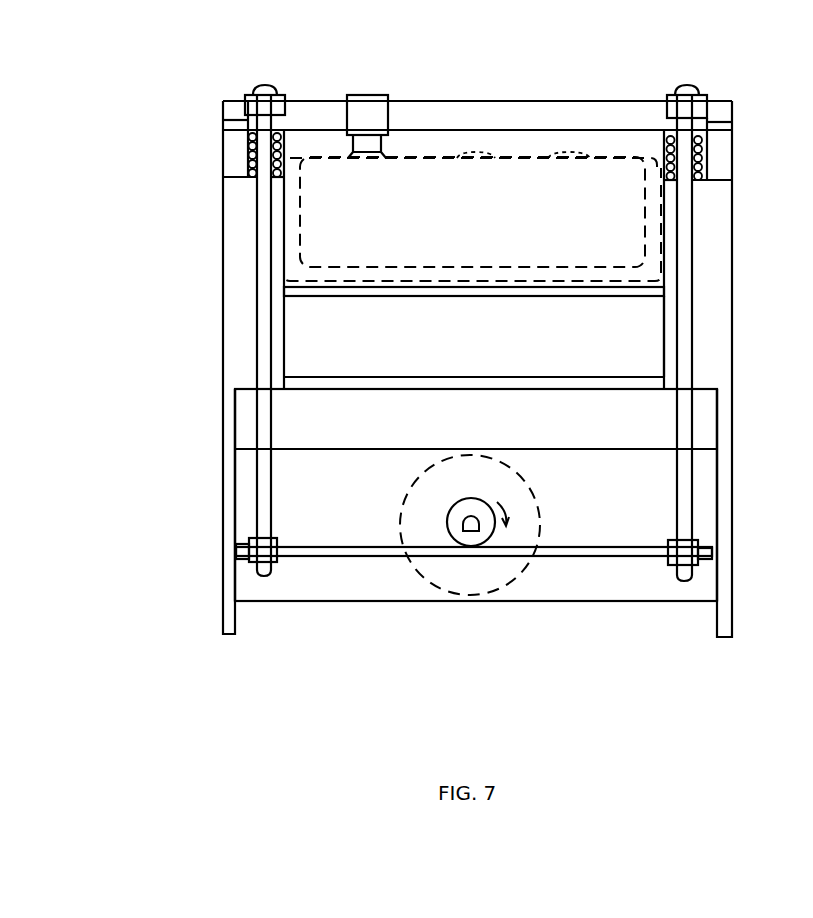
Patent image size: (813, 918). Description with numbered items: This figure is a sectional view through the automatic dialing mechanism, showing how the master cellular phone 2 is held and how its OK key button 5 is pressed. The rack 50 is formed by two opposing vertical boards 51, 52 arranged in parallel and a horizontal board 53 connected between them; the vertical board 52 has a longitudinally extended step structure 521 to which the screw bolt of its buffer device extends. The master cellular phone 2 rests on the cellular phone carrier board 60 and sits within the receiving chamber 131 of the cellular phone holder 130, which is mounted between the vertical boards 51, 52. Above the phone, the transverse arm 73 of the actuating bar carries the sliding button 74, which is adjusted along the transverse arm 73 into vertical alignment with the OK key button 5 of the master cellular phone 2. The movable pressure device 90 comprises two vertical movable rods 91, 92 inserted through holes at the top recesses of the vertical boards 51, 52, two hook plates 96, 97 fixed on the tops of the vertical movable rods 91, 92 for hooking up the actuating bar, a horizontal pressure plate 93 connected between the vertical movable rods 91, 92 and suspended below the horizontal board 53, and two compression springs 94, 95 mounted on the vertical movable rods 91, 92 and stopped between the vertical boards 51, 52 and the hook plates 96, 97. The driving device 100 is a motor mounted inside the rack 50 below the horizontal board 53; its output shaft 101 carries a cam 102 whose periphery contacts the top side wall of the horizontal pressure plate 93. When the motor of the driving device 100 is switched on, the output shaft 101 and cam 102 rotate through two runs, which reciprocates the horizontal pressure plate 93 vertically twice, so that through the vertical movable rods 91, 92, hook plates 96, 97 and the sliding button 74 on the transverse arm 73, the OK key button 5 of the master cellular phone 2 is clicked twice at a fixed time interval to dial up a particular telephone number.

The master cellular phone 2 is at (520, 192).
The OK key button 5 is at (353, 152).
The rack 50 is at (705, 392).
The vertical board 51 is at (725, 220).
The vertical board 52 is at (233, 208).
The step structure 521 is at (243, 392).
The horizontal board 53 is at (605, 390).
The cellular phone carrier board 60 is at (584, 294).
The transverse arm 73 is at (505, 115).
The sliding button 74 is at (390, 140).
The movable pressure device 90 is at (738, 325).
The vertical movable rod 91 is at (688, 272).
The vertical movable rod 92 is at (258, 260).
The horizontal pressure plate 93 is at (600, 558).
The compression spring 94 is at (702, 152).
The compression spring 95 is at (250, 148).
The hook plate 96 is at (705, 95).
The hook plate 97 is at (245, 96).
The driving device 100 is at (507, 585).
The output shaft 101 is at (470, 530).
The cam 102 is at (450, 528).
The cellular phone holder 130 is at (657, 160).
The receiving chamber 131 is at (660, 203).